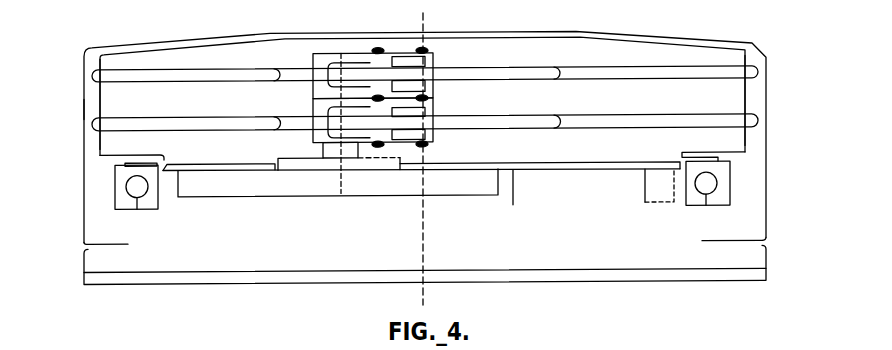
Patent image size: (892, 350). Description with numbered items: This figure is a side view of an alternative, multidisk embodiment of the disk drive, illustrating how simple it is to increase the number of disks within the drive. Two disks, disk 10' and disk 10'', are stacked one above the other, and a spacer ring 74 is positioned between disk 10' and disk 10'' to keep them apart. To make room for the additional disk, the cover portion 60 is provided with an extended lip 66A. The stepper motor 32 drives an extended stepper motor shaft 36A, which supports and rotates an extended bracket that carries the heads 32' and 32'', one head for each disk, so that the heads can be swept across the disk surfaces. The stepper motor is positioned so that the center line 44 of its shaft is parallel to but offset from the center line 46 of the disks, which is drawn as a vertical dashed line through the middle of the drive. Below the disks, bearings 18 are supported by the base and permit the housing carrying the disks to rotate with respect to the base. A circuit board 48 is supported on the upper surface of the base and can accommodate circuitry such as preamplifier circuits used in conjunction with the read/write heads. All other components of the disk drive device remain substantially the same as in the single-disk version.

The disk 10' is at (425, 62).
The disk 10'' is at (425, 110).
The bearings 18 is at (126, 198).
The stepper motor 32 is at (338, 198).
The head 32' is at (399, 73).
The head 32'' is at (401, 121).
The extended stepper motor shaft 36A is at (323, 153).
The center line 44 is at (341, 196).
The center line 46 is at (423, 206).
The circuit board 48 is at (490, 168).
The cover portion 60 is at (86, 60).
The extended lip 66A is at (84, 106).
The spacer ring 74 is at (101, 112).